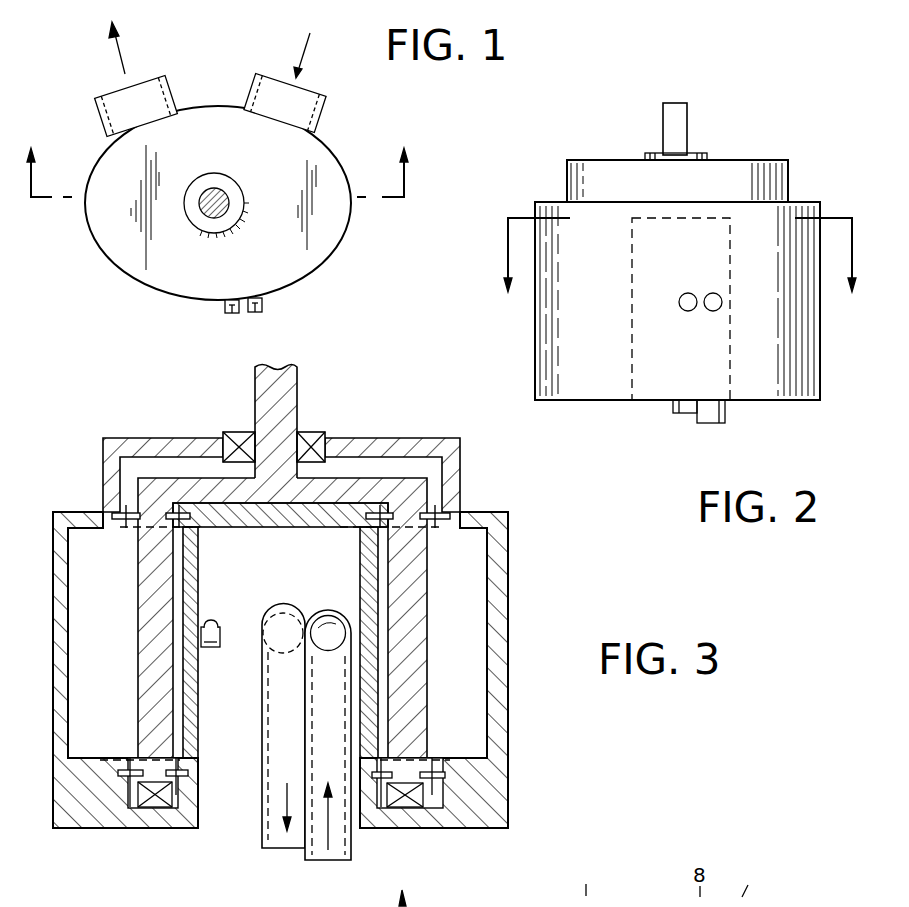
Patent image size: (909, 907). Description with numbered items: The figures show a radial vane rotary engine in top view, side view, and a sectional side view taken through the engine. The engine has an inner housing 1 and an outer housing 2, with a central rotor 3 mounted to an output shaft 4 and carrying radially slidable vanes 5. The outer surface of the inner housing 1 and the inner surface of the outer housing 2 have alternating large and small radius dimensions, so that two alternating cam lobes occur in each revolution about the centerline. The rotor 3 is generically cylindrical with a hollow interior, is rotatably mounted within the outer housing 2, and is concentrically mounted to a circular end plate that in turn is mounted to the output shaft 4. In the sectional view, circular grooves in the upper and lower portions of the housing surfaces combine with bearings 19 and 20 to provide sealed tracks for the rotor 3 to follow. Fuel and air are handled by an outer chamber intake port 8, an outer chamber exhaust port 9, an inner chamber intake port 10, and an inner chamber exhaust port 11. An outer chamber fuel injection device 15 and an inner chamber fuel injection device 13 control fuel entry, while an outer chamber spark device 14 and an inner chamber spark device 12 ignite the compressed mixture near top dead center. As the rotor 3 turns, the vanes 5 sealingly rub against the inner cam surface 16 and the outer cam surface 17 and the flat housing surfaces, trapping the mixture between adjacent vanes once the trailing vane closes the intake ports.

In FIG. 3, the inner housing 1 is at (200, 553).
In FIG. 1, the outer housing 2 is at (113, 278).
In FIG. 2, the outer housing 2 is at (535, 212).
In FIG. 3, the outer housing 2 is at (475, 505).
In FIG. 1, the central rotor 3 is at (217, 172).
In FIG. 3, the central rotor 3 is at (160, 458).
In FIG. 1, the output shaft 4 is at (213, 188).
In FIG. 2, the output shaft 4 is at (678, 217).
In FIG. 3, the output shaft 4 is at (298, 396).
In FIG. 3, the radially slidable vanes 5 is at (93, 548).
In FIG. 1, the outer chamber intake port 8 is at (280, 78).
In FIG. 1, the outer chamber exhaust port 9 is at (110, 87).
In FIG. 2, the inner chamber intake port 10 is at (720, 418).
In FIG. 3, the inner chamber intake port 10 is at (330, 862).
In FIG. 2, the inner chamber exhaust port 11 is at (688, 410).
In FIG. 3, the inner chamber exhaust port 11 is at (280, 850).
In FIG. 3, the inner chamber spark device 12 is at (210, 650).
In FIG. 3, the inner chamber fuel injection device 13 is at (215, 626).
In FIG. 1, the outer chamber spark device 14 is at (259, 314).
In FIG. 2, the outer chamber spark device 14 is at (713, 311).
In FIG. 1, the outer chamber fuel injection device 15 is at (228, 314).
In FIG. 2, the outer chamber fuel injection device 15 is at (686, 293).
In FIG. 3, the inner cam surface 16 is at (178, 732).
In FIG. 3, the outer cam surface 17 is at (80, 658).
In FIG. 3, the bearing 19 is at (240, 432).
In FIG. 3, the bearing 20 is at (157, 810).